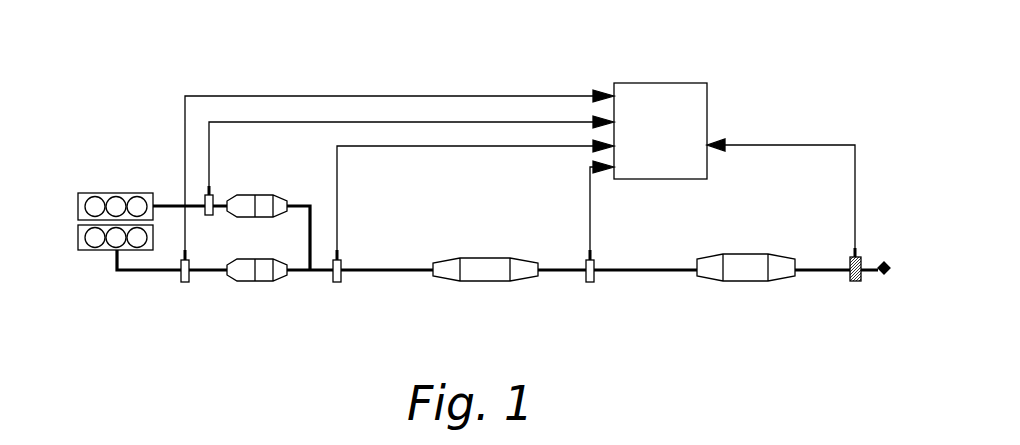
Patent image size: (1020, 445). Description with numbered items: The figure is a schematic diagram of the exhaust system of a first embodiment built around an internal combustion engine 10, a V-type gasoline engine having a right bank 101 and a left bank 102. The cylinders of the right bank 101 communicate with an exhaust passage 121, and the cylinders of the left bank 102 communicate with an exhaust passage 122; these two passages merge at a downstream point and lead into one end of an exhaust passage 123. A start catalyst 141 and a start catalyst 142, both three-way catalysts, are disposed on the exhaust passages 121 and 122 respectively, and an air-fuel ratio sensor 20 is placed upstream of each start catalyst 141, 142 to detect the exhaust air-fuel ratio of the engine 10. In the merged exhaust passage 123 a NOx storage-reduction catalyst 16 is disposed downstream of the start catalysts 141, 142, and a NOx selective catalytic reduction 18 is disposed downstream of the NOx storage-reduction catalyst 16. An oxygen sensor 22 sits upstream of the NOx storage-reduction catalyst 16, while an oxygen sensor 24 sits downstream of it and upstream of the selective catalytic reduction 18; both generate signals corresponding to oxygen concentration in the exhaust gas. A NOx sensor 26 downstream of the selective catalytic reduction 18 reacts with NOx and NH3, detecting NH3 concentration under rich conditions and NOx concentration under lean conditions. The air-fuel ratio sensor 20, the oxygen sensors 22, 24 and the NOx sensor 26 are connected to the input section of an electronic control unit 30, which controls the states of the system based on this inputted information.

The internal combustion engine 10 is at (108, 178).
The right bank 101 is at (80, 252).
The left bank 102 is at (87, 192).
The exhaust passage 121 is at (134, 273).
The exhaust passage 122 is at (164, 204).
The exhaust passage 123 is at (420, 273).
The start catalyst 141 is at (265, 283).
The start catalyst 142 is at (270, 194).
The NOx storage-reduction catalyst 16 is at (487, 262).
The NOx selective catalytic reduction 18 is at (740, 258).
The air-fuel ratio sensor 20 is at (217, 214).
The oxygen sensor 22 is at (338, 283).
The oxygen sensor 24 is at (592, 283).
The NOx sensor 26 is at (850, 280).
The electronic control unit 30 is at (676, 83).